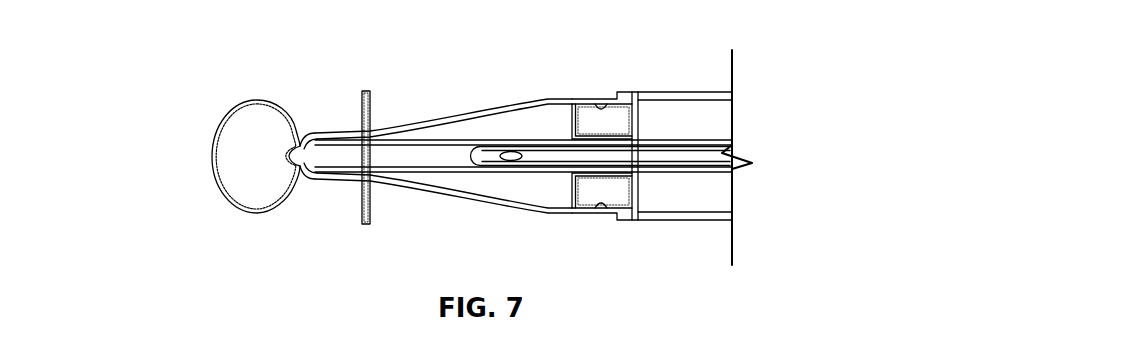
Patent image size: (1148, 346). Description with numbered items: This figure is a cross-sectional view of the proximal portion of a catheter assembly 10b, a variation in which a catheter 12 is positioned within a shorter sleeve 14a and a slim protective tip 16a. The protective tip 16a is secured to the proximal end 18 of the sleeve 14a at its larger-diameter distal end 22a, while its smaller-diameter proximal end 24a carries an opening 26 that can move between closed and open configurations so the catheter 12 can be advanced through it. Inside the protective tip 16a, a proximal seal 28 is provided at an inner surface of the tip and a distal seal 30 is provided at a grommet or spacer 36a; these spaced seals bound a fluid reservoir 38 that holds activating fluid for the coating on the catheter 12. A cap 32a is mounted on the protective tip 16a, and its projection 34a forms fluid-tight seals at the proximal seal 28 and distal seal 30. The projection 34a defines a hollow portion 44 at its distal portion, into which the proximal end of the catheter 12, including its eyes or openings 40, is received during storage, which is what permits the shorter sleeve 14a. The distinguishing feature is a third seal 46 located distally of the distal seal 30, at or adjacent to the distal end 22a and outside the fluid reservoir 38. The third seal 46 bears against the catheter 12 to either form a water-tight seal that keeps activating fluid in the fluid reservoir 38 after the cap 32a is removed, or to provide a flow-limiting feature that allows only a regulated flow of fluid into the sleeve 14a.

The catheter assembly 10b is at (717, 258).
The catheter 12 is at (675, 142).
The sleeve 14a is at (703, 222).
The protective tip 16a is at (547, 100).
The proximal end of the sleeve 18 is at (637, 222).
The distal end of the protective tip 22a is at (604, 100).
The proximal end of the protective tip 24a is at (327, 182).
The opening 26 is at (301, 146).
The proximal seal 28 is at (350, 134).
The distal seal 30 is at (585, 180).
The cap 32a is at (231, 114).
The projection 34a is at (437, 140).
The grommet or spacer 36a is at (583, 112).
The fluid reservoir 38 is at (483, 130).
The eyes or openings 40 is at (508, 165).
The hollow portion 44 is at (475, 170).
The third seal 46 is at (640, 192).